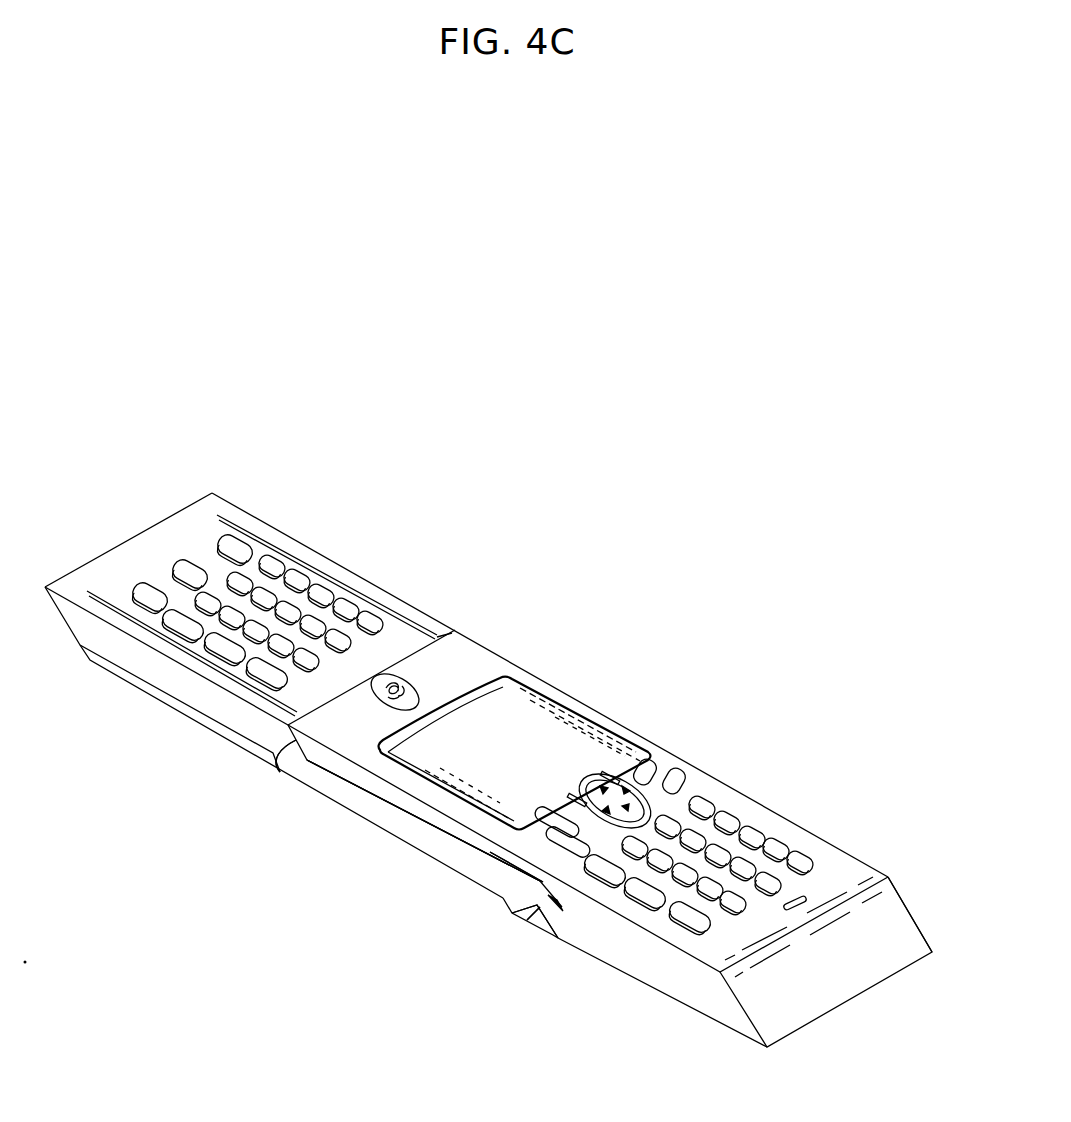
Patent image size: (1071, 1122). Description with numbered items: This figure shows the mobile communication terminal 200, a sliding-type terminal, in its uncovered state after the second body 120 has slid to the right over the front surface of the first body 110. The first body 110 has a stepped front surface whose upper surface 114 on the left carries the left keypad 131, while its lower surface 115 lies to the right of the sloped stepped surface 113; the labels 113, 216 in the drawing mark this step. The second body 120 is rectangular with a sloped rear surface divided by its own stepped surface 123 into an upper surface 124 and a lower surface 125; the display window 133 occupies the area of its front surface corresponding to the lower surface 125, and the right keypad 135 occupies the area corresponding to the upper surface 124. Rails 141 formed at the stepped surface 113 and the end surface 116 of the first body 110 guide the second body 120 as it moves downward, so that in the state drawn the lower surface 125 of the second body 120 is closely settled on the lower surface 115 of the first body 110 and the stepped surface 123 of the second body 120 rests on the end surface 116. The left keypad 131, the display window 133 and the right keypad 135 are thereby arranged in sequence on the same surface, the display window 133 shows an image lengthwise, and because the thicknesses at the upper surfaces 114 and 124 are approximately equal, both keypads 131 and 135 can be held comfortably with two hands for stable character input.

The mobile communication terminal 200 is at (689, 574).
The first body 110 is at (138, 696).
The second body 120 is at (826, 840).
The upper surface 114 is at (216, 506).
The rails 141 is at (205, 534).
The left keypad 131 is at (289, 562).
The display window 133 is at (512, 712).
The right keypad 135 is at (706, 803).
The upper surface 124 is at (853, 877).
The stepped surface 113 is at (281, 776).
The stopper 216 is at (281, 776).
The lower surface 115 is at (413, 827).
The lower surface 125 is at (413, 827).
The end surface 116 is at (527, 916).
The stepped surface 123 is at (527, 916).